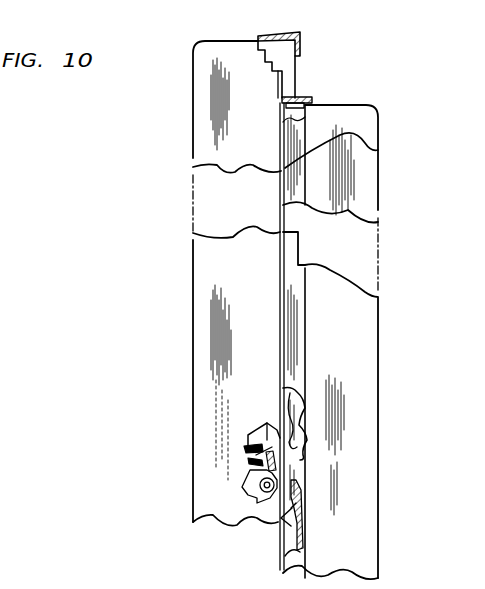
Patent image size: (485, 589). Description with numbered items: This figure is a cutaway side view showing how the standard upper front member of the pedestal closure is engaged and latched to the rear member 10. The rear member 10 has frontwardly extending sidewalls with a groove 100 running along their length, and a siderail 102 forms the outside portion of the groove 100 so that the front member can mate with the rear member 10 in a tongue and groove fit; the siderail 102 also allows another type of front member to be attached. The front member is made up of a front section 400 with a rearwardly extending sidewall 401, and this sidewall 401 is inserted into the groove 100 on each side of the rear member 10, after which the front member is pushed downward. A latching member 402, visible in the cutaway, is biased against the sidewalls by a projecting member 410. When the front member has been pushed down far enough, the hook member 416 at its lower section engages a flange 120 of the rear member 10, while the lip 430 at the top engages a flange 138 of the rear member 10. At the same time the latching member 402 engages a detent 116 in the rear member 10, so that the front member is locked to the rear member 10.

The rear member 10 is at (381, 320).
The groove 100 is at (306, 458).
The siderail 102 is at (378, 150).
The detent 116 is at (280, 519).
The flange 120 is at (294, 485).
The flange 138 is at (295, 95).
The front section 400 is at (193, 122).
The rearwardly extending sidewall 401 is at (283, 138).
The latching member 402 is at (281, 438).
The projecting member 410 is at (248, 452).
The hook member 416 is at (300, 399).
The lip 430 is at (298, 31).